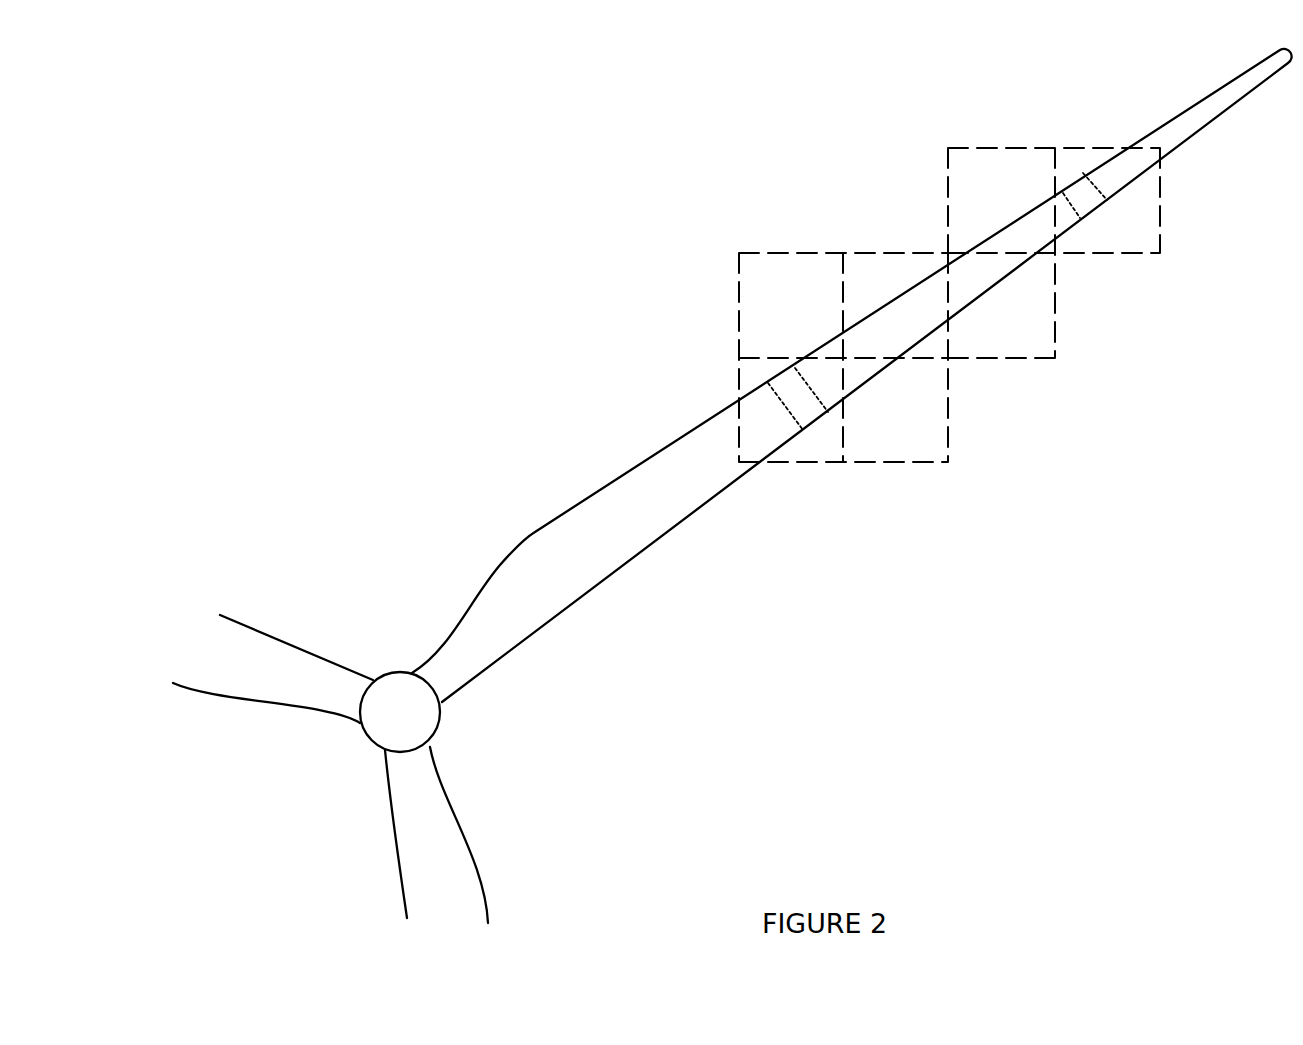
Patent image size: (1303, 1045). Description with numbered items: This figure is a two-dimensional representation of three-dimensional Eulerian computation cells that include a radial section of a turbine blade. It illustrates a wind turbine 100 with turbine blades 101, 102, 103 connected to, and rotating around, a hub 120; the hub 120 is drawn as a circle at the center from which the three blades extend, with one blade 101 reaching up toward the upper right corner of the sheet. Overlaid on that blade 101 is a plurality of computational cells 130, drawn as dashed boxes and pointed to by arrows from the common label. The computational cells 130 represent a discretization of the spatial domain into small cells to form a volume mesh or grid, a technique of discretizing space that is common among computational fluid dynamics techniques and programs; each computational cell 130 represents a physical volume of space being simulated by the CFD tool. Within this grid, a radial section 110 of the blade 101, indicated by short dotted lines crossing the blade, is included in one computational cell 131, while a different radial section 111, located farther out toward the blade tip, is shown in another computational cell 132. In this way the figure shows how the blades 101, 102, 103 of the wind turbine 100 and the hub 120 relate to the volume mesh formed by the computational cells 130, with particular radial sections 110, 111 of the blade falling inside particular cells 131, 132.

The wind turbine 100 is at (285, 122).
The turbine blade 101 is at (533, 578).
The turbine blade 102 is at (422, 850).
The turbine blade 103 is at (277, 683).
The radial section 110 is at (797, 397).
The radial section 111 is at (1085, 193).
The hub 120 is at (385, 732).
The computational cells 130 is at (925, 123).
The computational cell 131 is at (805, 452).
The computational cell 132 is at (1105, 238).